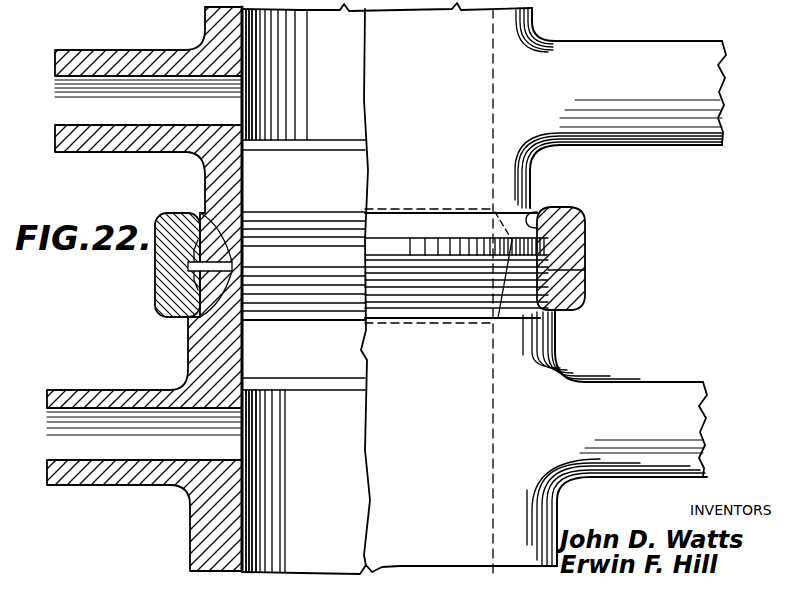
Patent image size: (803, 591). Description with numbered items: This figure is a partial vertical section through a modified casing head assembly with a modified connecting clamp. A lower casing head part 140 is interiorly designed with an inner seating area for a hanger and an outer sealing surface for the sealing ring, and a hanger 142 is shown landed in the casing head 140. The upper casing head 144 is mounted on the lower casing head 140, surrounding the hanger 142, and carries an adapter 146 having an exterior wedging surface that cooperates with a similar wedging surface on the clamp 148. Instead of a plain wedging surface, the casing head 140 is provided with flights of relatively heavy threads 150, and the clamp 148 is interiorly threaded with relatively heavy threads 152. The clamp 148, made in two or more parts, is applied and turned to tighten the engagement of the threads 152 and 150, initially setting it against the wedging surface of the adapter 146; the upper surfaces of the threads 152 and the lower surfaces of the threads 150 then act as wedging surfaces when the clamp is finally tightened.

The lower casing head part 140 is at (202, 341).
The hanger 142 is at (333, 192).
The upper casing head 144 is at (505, 163).
The adapter 146 is at (228, 257).
The clamp 148 is at (568, 233).
The threads 150 is at (545, 315).
The threads 152 is at (553, 272).